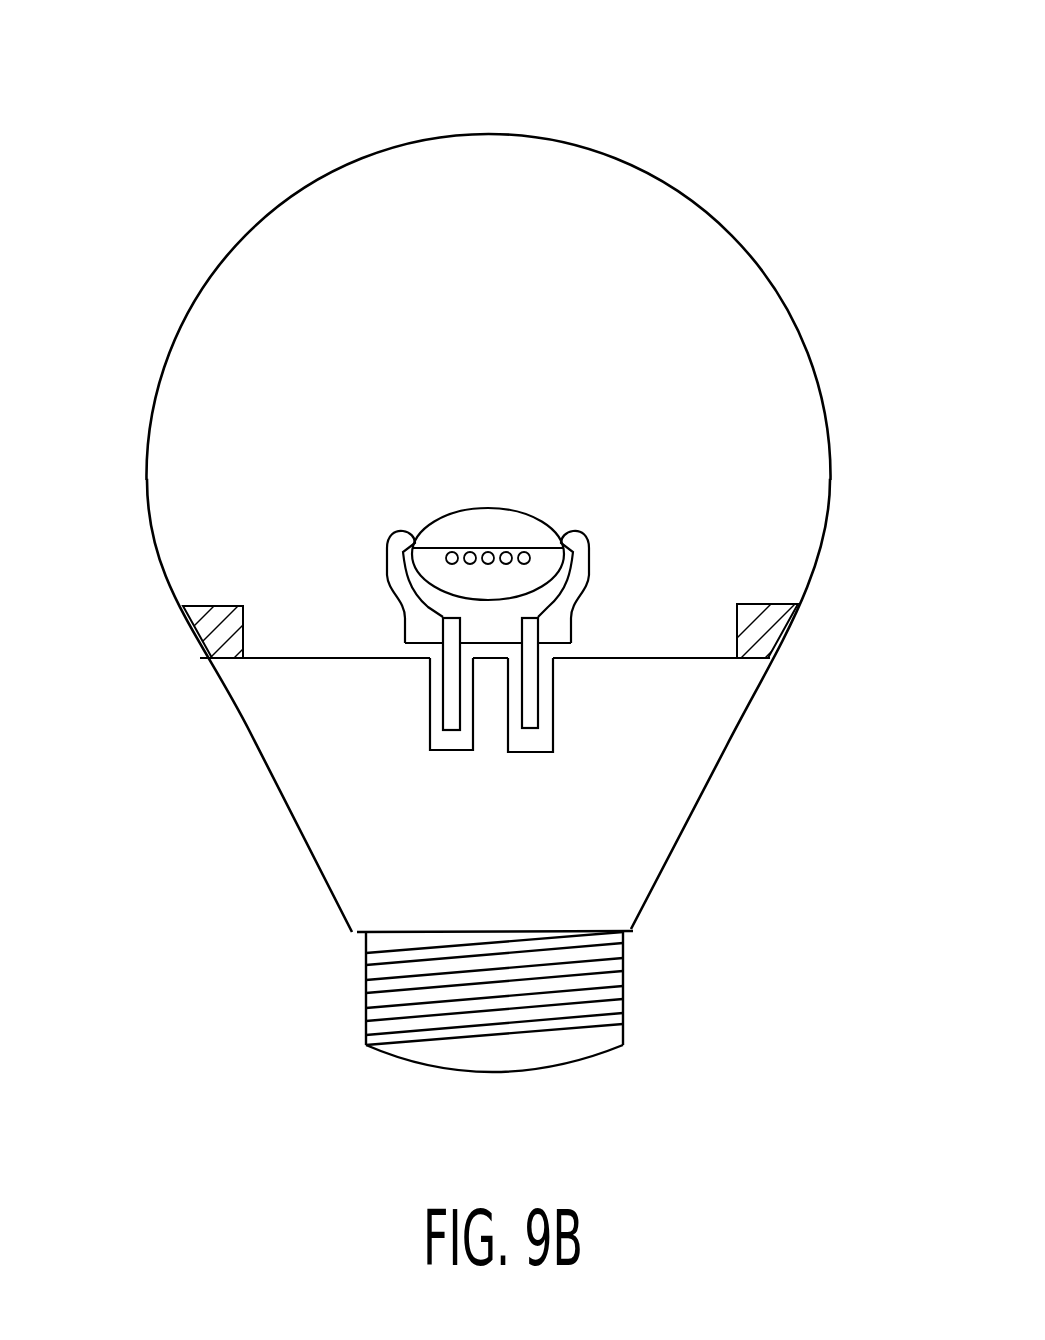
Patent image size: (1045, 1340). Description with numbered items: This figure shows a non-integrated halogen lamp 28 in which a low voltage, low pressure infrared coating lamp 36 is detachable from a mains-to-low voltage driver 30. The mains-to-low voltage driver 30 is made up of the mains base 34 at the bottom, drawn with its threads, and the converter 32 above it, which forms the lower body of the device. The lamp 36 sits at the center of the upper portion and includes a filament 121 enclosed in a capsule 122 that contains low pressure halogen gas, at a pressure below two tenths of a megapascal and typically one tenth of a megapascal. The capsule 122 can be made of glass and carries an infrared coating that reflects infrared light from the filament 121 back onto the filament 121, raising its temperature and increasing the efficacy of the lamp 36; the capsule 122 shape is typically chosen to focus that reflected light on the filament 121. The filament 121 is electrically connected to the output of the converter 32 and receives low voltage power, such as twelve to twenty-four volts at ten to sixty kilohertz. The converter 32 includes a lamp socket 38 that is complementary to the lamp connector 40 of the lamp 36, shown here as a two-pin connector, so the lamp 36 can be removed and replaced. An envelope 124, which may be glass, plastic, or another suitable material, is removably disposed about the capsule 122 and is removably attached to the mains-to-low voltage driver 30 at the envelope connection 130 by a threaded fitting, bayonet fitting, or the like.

The halogen lamp 28 is at (846, 42).
The mains-to-low voltage driver 30 is at (197, 872).
The converter 32 is at (685, 767).
The mains base 34 is at (627, 1000).
The low voltage, low pressure IRC lamp 36 is at (497, 512).
The lamp socket 38 is at (430, 703).
The lamp connector 40 is at (533, 680).
The filament 121 is at (513, 547).
The capsule 122 is at (447, 518).
The envelope 124 is at (753, 257).
The envelope connection 130 is at (207, 635).